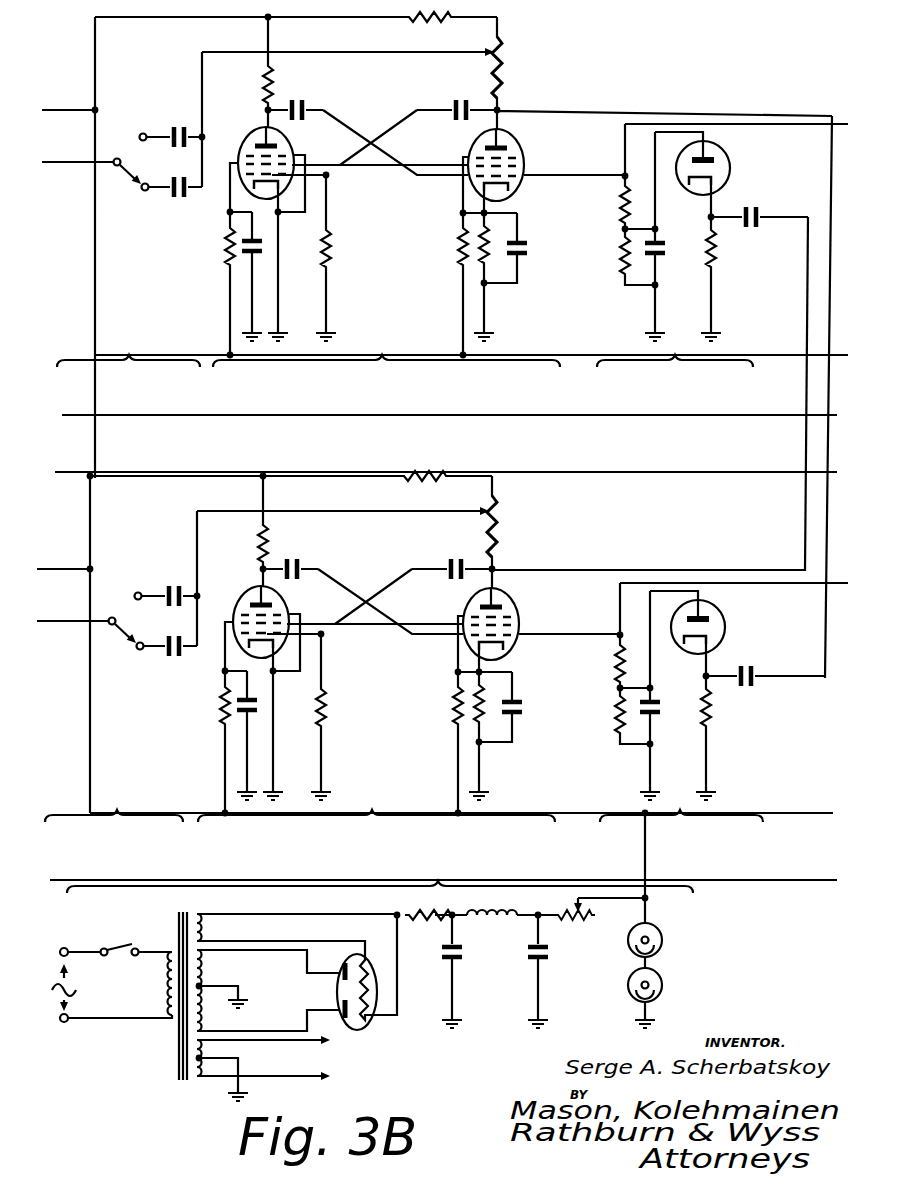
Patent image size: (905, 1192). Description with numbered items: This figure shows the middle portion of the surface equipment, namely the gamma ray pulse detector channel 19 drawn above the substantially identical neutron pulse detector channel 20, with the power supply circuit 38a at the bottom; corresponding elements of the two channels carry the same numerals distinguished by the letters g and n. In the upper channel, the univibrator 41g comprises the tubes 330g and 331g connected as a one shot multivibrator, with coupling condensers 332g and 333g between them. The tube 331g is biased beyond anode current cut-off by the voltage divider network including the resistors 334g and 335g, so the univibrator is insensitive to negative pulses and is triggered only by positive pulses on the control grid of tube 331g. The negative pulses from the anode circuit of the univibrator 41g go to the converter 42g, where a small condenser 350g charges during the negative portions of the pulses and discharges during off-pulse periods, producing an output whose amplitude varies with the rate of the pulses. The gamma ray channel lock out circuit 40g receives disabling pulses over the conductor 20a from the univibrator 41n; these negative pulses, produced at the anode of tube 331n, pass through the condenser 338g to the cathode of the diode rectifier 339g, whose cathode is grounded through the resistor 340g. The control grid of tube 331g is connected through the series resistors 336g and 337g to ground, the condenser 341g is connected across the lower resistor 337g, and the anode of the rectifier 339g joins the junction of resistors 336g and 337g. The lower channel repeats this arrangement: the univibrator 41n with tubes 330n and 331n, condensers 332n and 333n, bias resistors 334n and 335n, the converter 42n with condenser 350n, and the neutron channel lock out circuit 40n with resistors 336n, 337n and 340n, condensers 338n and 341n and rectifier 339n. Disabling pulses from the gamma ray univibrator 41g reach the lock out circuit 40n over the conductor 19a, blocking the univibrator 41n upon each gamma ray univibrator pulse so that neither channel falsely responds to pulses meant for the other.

The gamma ray pulse detector channel 19 is at (449, 428).
The neutron pulse detector channel 20 is at (446, 454).
The conductor 19a is at (826, 530).
The conductor 20a is at (806, 494).
The power supply circuit 38a is at (443, 955).
The gamma ray channel lock out circuit 40g is at (685, 381).
The neutron channel lock out circuit 40n is at (716, 837).
The univibrator 41g is at (386, 374).
The univibrator 41n is at (376, 829).
The converter 42g is at (127, 381).
The converter 42n is at (114, 836).
The tube 330g is at (298, 139).
The tube 331g is at (524, 143).
The coupling capacitor (gamma) 332g is at (305, 101).
The coupling capacitor (gamma) 333g is at (466, 100).
The resistor 334g is at (460, 264).
The resistor 335g is at (491, 258).
The resistor 336g is at (621, 200).
The resistor 337g is at (621, 256).
The condenser 338g is at (752, 206).
The diode rectifier 339g is at (724, 153).
The resistor 340g is at (716, 256).
The condenser 341g is at (661, 254).
The condenser 350g is at (173, 197).
The tube 330n is at (261, 622).
The tube 331n is at (530, 619).
The coupling capacitor (neutron) 332n is at (324, 548).
The coupling capacitor (neutron) 333n is at (429, 549).
The resistor 334n is at (427, 712).
The resistor 335n is at (524, 736).
The resistor 336n is at (586, 663).
The resistor 337n is at (587, 714).
The condenser 338n is at (773, 659).
The diode rectifier 339n is at (733, 622).
The resistor 340n is at (749, 711).
The condenser 341n is at (676, 731).
The condenser 350n is at (144, 641).